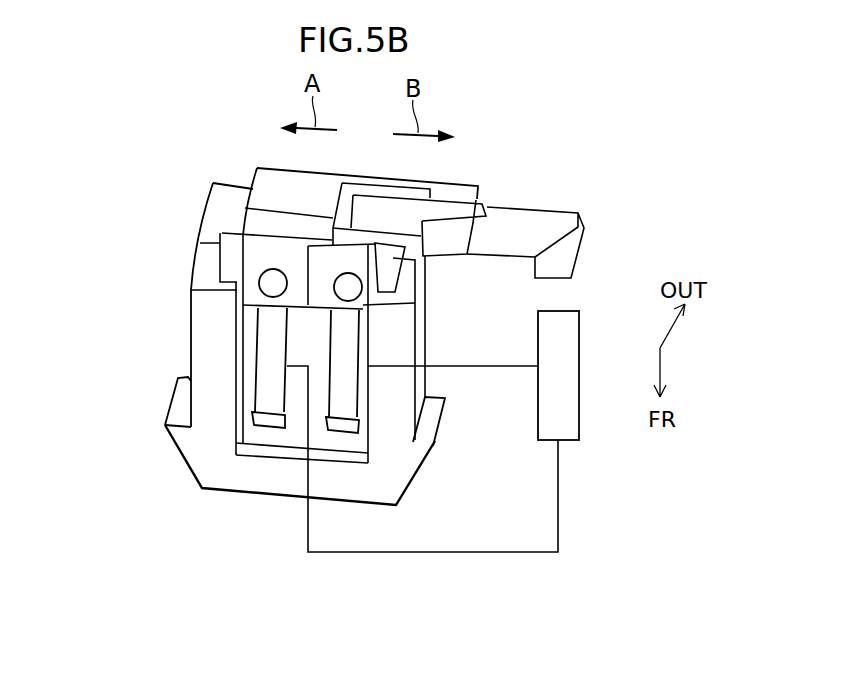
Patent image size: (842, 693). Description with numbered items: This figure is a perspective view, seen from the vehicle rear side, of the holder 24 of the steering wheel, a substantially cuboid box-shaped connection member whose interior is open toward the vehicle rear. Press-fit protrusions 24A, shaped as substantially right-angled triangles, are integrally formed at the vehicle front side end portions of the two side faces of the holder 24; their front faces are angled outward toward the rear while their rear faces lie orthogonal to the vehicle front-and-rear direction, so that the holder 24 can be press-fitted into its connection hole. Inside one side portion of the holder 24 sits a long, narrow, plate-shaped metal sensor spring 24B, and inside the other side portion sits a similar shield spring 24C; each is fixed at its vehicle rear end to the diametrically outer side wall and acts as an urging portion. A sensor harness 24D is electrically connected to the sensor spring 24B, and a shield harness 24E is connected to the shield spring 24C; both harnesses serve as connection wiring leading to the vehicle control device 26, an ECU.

The holder 24 is at (200, 162).
The press-fit protrusions 24A is at (172, 395).
The sensor spring 24B is at (260, 320).
The shield spring 24C is at (363, 333).
The sensor harness 24D is at (455, 553).
The shield harness 24E is at (482, 368).
The control device 26 is at (581, 346).